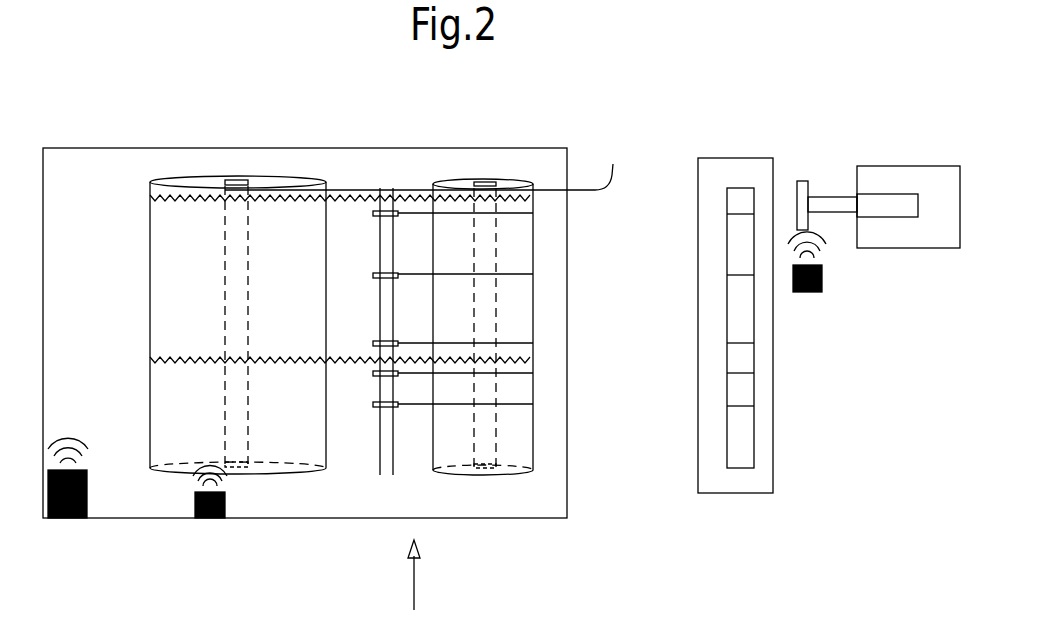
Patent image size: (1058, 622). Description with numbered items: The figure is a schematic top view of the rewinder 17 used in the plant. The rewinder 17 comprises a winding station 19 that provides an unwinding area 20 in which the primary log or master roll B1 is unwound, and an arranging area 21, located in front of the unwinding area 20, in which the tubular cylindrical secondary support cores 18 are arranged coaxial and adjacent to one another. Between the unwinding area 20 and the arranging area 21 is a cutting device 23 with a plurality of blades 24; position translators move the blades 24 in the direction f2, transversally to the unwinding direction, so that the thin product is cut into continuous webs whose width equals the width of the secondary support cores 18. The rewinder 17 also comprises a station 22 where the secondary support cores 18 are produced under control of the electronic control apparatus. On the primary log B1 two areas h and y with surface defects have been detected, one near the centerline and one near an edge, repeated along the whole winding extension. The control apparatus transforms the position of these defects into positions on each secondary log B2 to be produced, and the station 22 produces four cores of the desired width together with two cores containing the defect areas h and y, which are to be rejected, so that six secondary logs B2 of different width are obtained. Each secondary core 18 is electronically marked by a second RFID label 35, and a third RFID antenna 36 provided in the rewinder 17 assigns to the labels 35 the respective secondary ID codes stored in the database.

The rewinder 17 is at (722, 134).
The secondary support cores 18 is at (745, 197).
The winding station 19 is at (268, 491).
The unwinding area 20 is at (200, 165).
The arranging area 21 is at (490, 168).
The station 22 is at (860, 361).
The cutting device 23 is at (381, 172).
The blades 24 is at (373, 214).
The second RFID labels 35 is at (64, 518).
The third RFID antenna 36 is at (822, 282).
The primary log B1 is at (190, 280).
The secondary logs B2 is at (517, 453).
The defect area y Y is at (180, 203).
The defect area h is at (182, 360).
The direction f2 is at (414, 585).